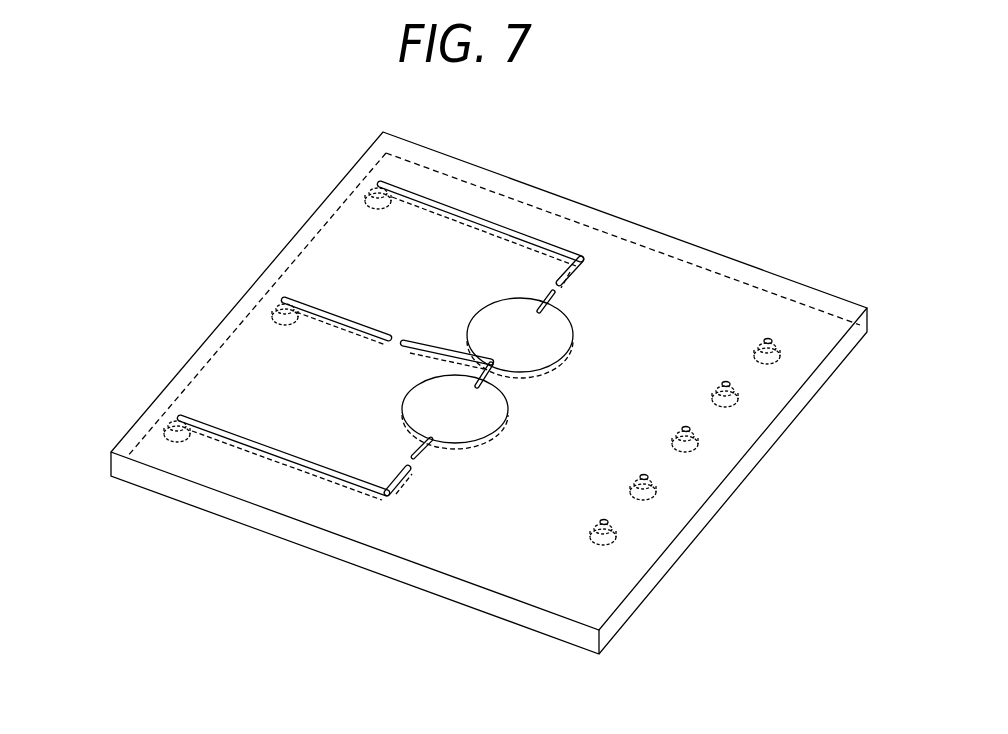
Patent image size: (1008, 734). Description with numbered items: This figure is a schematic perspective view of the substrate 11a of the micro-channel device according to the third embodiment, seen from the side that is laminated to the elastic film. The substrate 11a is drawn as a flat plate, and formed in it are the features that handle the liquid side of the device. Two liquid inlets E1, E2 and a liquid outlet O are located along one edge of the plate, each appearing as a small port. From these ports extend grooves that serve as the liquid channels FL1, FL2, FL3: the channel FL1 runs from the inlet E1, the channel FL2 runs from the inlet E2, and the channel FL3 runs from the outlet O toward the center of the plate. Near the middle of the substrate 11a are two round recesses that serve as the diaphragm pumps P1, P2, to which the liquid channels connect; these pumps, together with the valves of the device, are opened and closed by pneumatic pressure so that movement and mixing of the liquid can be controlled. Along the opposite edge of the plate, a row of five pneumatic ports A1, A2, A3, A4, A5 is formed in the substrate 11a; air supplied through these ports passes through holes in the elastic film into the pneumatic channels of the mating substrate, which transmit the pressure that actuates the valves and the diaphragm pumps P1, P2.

The substrate 11a is at (698, 261).
The liquid inlet E1 is at (370, 194).
The liquid inlet E2 is at (163, 427).
The liquid outlet O is at (285, 313).
The liquid channel FL1 is at (447, 216).
The liquid channel FL2 is at (268, 447).
The liquid channel FL3 is at (341, 325).
The diaphragm pump P1 is at (543, 350).
The diaphragm pump P2 is at (464, 432).
The pneumatic port A1 is at (782, 352).
The pneumatic port A2 is at (618, 534).
The pneumatic port A3 is at (740, 395).
The pneumatic port A4 is at (658, 488).
The pneumatic port A5 is at (700, 440).